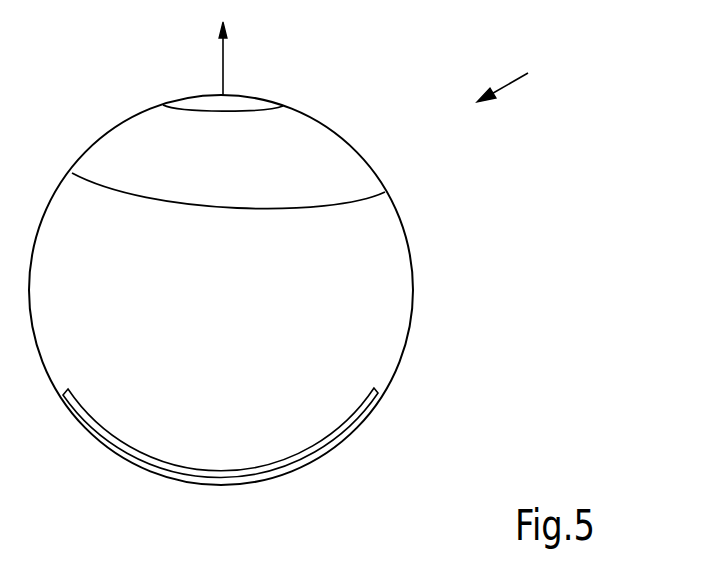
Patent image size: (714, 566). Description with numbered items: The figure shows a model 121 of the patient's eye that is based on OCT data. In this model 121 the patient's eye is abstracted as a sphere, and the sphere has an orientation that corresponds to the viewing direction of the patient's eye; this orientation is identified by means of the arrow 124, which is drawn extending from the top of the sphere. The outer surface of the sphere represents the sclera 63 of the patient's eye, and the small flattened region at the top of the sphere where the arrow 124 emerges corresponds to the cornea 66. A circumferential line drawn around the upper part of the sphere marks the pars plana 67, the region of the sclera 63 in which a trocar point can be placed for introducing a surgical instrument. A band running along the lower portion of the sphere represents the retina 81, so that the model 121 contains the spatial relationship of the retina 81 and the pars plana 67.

The sclera 63 is at (413, 265).
The cornea 66 is at (193, 95).
The pars plana 67 is at (127, 135).
The retina 81 is at (363, 398).
The model 121 is at (522, 69).
The arrow 124 is at (223, 67).